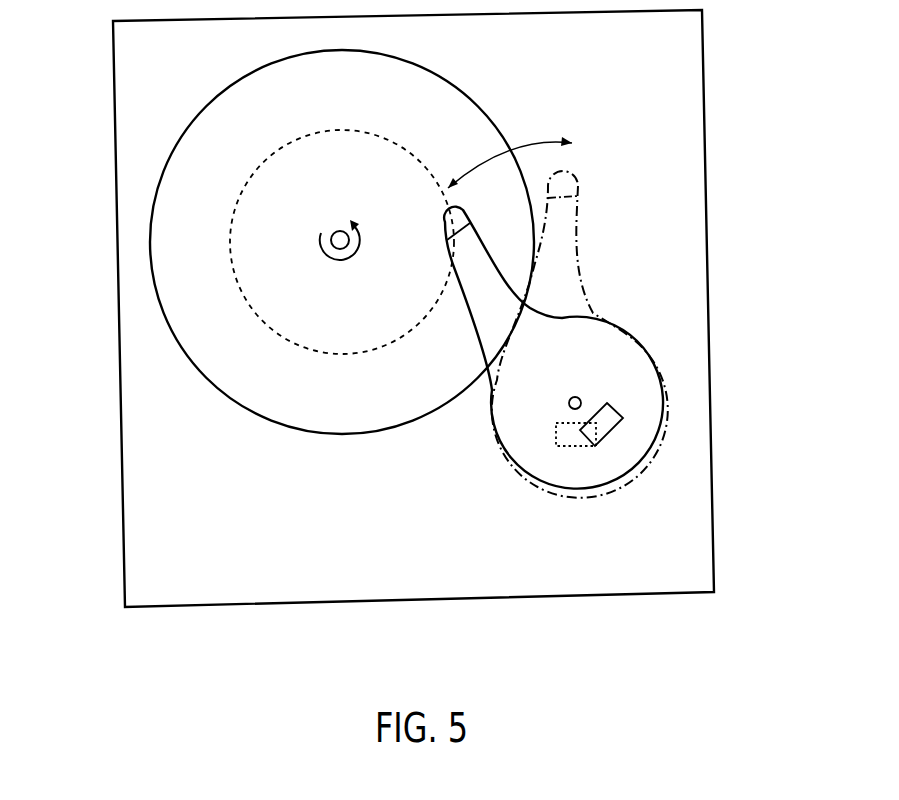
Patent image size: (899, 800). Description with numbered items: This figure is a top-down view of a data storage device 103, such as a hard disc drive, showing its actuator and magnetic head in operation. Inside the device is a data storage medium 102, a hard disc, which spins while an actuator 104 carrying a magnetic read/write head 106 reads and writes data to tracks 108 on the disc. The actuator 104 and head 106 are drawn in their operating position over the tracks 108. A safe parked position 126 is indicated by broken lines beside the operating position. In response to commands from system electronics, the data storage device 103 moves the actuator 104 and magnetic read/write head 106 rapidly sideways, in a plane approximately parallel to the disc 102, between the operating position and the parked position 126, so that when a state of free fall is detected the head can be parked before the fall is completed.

The data storage medium 102 is at (149, 280).
The data storage device 103 is at (571, 74).
The actuator 104 is at (470, 307).
The magnetic read/write head 106 is at (467, 217).
The tracks 108 is at (238, 200).
The safe parked position 126 is at (575, 228).